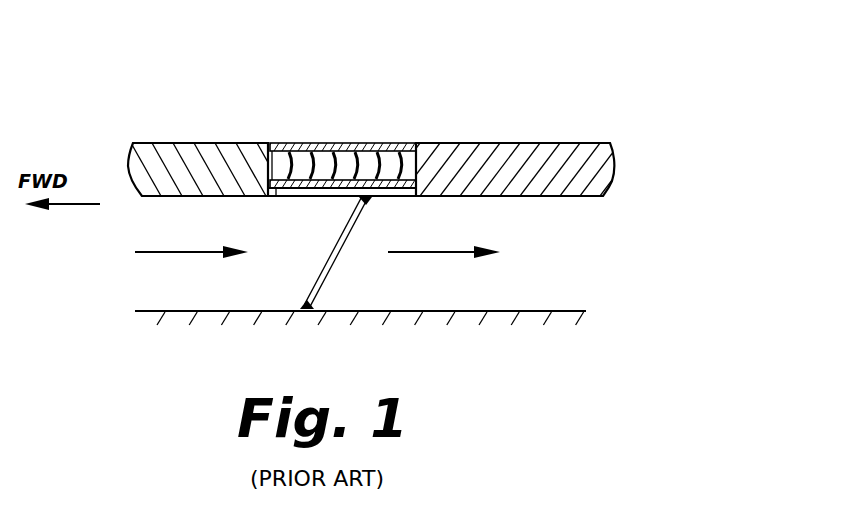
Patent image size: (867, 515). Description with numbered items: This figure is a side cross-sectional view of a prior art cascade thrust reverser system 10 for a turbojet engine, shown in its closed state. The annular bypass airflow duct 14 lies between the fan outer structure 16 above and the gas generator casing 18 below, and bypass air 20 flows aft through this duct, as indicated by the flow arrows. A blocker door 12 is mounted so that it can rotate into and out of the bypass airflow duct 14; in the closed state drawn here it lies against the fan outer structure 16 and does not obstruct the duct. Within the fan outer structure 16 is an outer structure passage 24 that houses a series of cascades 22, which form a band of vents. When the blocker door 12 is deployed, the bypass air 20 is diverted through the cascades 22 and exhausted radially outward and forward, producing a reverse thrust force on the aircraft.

The cascade thrust reverser system 10 is at (419, 68).
The blocker door 12 is at (310, 197).
The bypass airflow duct 14 is at (148, 284).
The fan outer structure 16 is at (168, 150).
The gas generator casing 18 is at (500, 316).
The bypass air 20 is at (420, 251).
The cascades 22 is at (404, 162).
The outer structure passage 24 is at (280, 158).